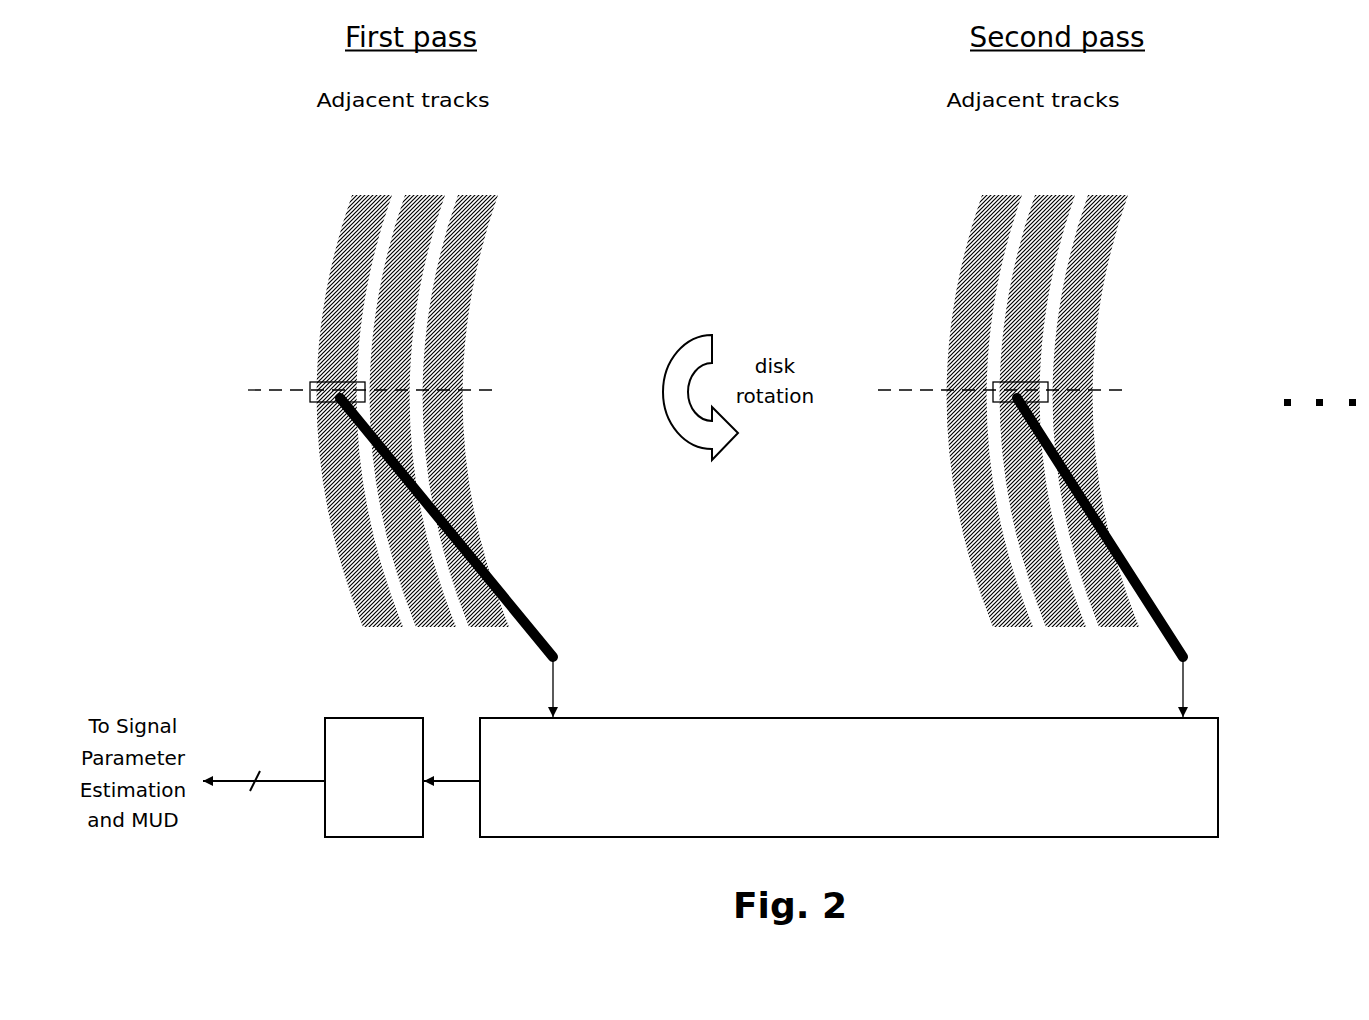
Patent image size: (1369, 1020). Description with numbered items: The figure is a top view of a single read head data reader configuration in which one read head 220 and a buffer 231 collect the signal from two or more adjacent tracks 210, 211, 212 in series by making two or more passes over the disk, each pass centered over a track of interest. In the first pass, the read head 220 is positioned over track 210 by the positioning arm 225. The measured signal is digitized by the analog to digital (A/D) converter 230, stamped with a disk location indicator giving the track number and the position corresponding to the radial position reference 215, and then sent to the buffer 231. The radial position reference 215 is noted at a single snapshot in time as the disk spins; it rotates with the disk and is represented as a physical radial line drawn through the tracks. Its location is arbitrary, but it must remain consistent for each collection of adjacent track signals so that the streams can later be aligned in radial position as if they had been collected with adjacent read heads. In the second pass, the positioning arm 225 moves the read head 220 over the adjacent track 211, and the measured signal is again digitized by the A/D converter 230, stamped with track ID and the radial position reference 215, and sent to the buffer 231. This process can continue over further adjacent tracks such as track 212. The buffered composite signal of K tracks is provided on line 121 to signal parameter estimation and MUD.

The track 210 is at (367, 192).
The adjacent track 211 is at (420, 192).
The adjacent track 212 is at (480, 192).
The radial position reference 215 is at (1170, 358).
The read head 220 is at (939, 379).
The positioning arm 225 is at (1185, 557).
The analog to digital (A/D) converter 230 is at (849, 777).
The buffer 231 is at (402, 777).
The line 121 is at (264, 788).